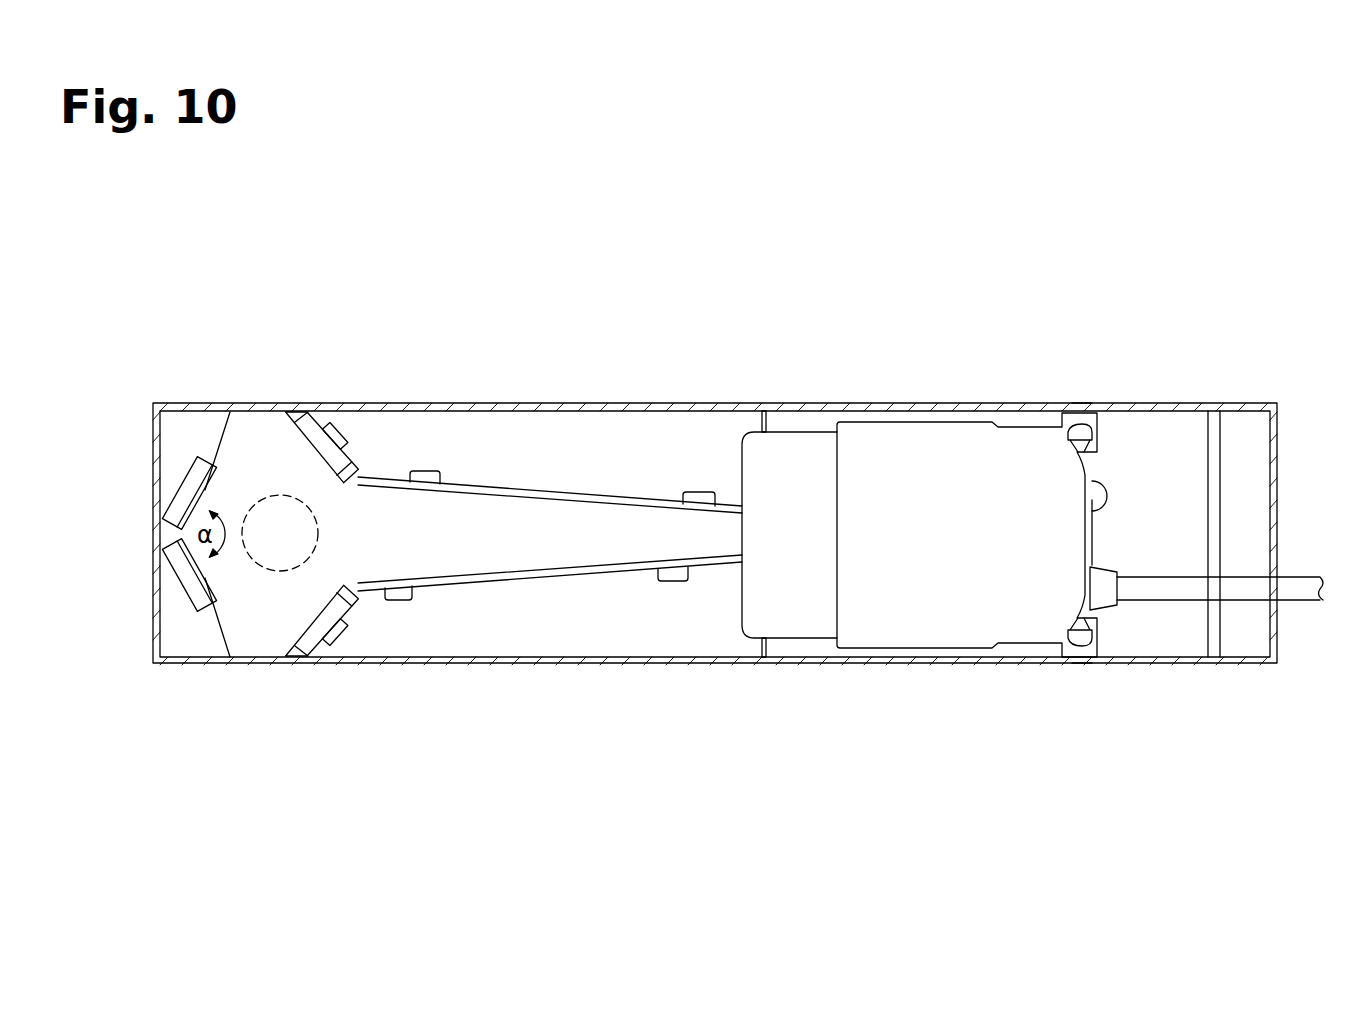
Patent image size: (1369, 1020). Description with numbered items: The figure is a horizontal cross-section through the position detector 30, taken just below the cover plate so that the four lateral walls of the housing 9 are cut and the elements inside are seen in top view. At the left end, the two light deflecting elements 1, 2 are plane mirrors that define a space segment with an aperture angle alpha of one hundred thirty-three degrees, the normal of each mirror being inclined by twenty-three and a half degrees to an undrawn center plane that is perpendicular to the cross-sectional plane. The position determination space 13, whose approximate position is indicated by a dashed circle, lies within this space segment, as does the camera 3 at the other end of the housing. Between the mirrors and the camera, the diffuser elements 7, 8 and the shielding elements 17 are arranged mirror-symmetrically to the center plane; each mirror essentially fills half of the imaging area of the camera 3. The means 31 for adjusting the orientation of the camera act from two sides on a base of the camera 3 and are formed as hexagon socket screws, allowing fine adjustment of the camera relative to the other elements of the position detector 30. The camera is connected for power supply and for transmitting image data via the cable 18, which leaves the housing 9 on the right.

The light deflecting element 1 is at (205, 492).
The light deflecting element 2 is at (205, 580).
The camera 3 is at (790, 615).
The diffuser element 7 is at (313, 652).
The diffuser element 8 is at (314, 416).
The housing 9 is at (591, 665).
The position determination space 13 is at (265, 580).
The shielding element 17 is at (510, 484).
The cable 18 is at (1307, 595).
The position detector 30 is at (670, 306).
The means for adjusting the orientation of the camera 31 is at (1082, 403).